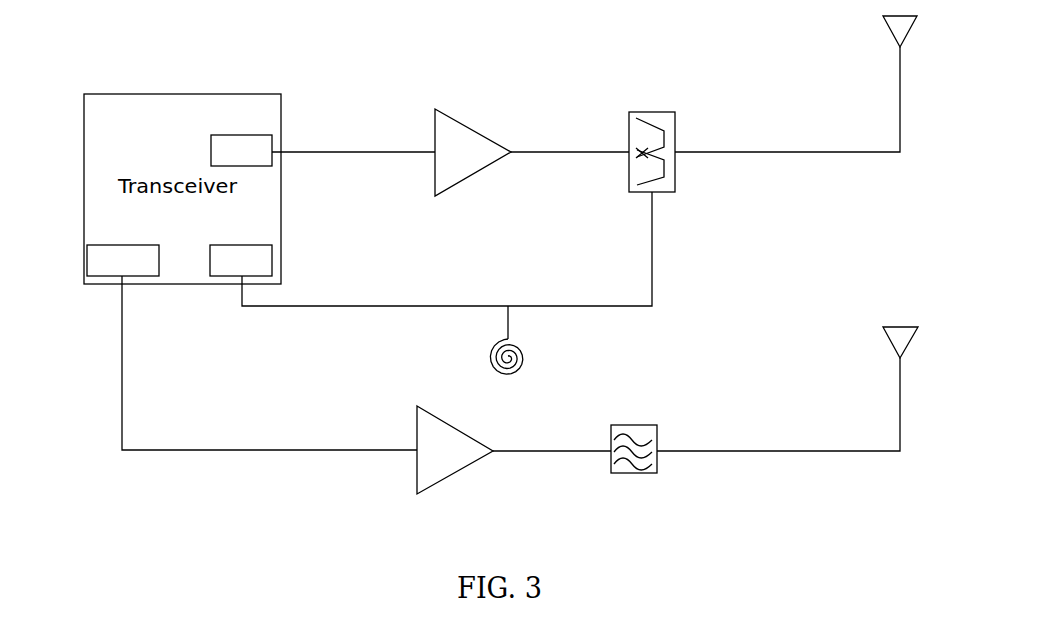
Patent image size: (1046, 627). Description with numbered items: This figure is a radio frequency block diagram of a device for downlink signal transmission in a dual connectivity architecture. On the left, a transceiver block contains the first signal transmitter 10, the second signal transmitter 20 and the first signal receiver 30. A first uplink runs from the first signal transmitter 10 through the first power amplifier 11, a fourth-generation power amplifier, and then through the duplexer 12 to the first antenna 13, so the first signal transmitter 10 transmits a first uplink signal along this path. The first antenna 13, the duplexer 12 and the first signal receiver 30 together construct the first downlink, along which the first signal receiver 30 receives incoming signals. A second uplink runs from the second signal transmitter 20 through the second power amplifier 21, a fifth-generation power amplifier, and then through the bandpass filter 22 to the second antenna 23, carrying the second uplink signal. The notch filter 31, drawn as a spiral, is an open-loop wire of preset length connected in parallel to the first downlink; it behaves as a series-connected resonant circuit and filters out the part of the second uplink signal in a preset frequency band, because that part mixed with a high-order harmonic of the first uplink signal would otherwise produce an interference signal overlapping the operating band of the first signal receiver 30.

The first signal transmitter 10 is at (210, 152).
The second signal transmitter 20 is at (120, 245).
The first signal receiver 30 is at (242, 245).
The first power amplifier 11 is at (472, 128).
The duplexer 12 is at (652, 111).
The first antenna 13 is at (900, 47).
The second power amplifier 21 is at (453, 472).
The bandpass filter 22 is at (658, 425).
The second antenna 23 is at (900, 358).
The notch filter 31 is at (527, 368).